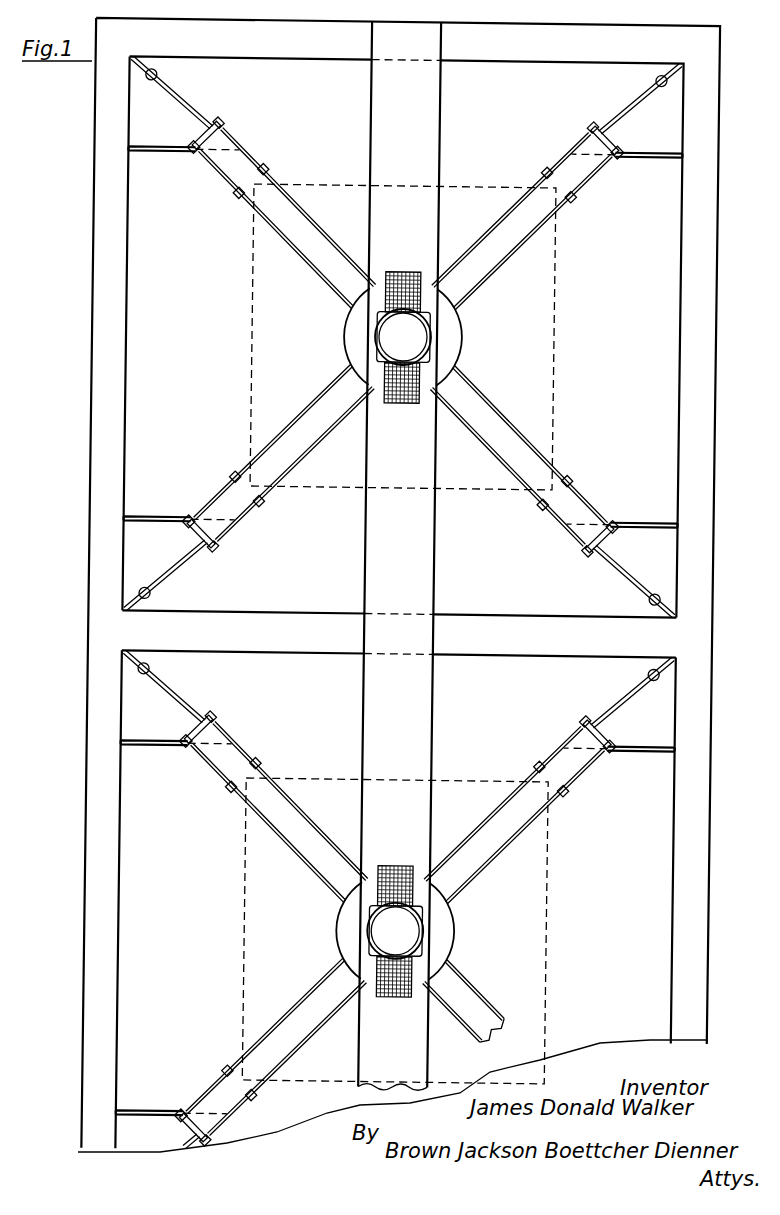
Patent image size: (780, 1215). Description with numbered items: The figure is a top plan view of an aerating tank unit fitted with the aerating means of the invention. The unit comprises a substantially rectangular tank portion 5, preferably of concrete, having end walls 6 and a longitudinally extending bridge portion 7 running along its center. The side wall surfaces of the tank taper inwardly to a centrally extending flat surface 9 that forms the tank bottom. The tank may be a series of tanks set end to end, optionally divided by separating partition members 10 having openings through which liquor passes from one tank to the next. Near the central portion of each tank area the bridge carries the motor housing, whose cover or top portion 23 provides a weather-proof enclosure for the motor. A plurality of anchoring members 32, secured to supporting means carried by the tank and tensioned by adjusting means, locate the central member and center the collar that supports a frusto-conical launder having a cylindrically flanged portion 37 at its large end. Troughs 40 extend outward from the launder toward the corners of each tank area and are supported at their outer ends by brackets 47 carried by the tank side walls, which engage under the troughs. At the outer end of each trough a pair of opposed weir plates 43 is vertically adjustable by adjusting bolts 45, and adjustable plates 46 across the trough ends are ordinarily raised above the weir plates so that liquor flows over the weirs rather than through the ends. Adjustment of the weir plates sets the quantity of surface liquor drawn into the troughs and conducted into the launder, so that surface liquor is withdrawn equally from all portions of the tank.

The tank portion 5 is at (97, 440).
The end walls 6 is at (497, 61).
The bridge portion 7 is at (376, 100).
The flat surface 9 is at (530, 348).
The separating partition members 10 is at (313, 628).
The cover or top portion 23 is at (415, 338).
The cylindrically flanged portion 37 is at (458, 350).
The anchoring members 32 is at (177, 105).
The troughs 40 is at (325, 232).
The weir plates 43 is at (240, 153).
The adjusting bolts 45 is at (546, 170).
The adjustable plates 46 is at (613, 149).
The brackets 47 is at (165, 155).